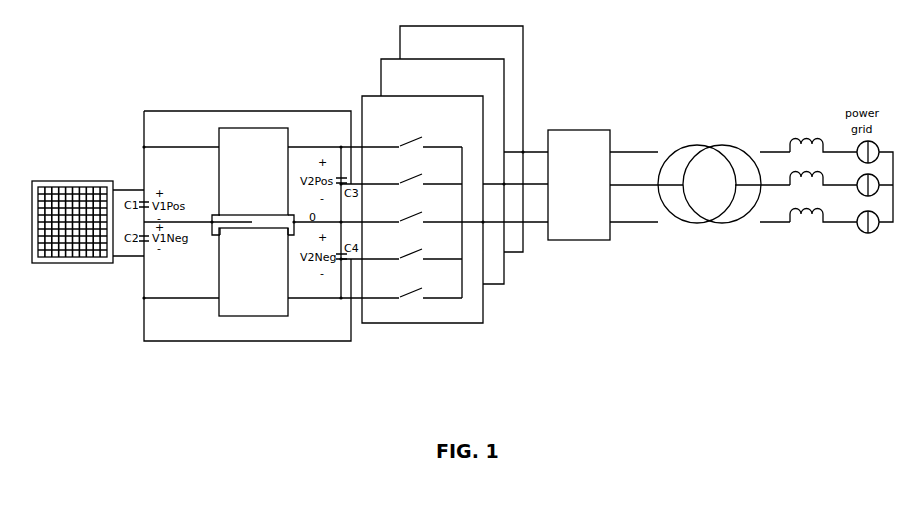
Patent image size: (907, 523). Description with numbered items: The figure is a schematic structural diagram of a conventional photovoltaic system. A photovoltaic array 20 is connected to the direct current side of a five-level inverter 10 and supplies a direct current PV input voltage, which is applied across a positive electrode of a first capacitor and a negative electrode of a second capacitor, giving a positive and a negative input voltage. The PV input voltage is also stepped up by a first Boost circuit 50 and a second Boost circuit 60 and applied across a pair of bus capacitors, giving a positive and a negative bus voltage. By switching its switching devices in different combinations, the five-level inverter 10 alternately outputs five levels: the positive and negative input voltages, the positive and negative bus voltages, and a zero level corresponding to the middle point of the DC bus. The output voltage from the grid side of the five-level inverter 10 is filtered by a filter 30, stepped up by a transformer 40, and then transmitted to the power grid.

The five-level inverter 10 is at (445, 26).
The photovoltaic array 20 is at (72, 181).
The filter 30 is at (577, 130).
The transformer 40 is at (708, 146).
The first Boost circuit 50 is at (219, 168).
The second Boost circuit 60 is at (219, 260).